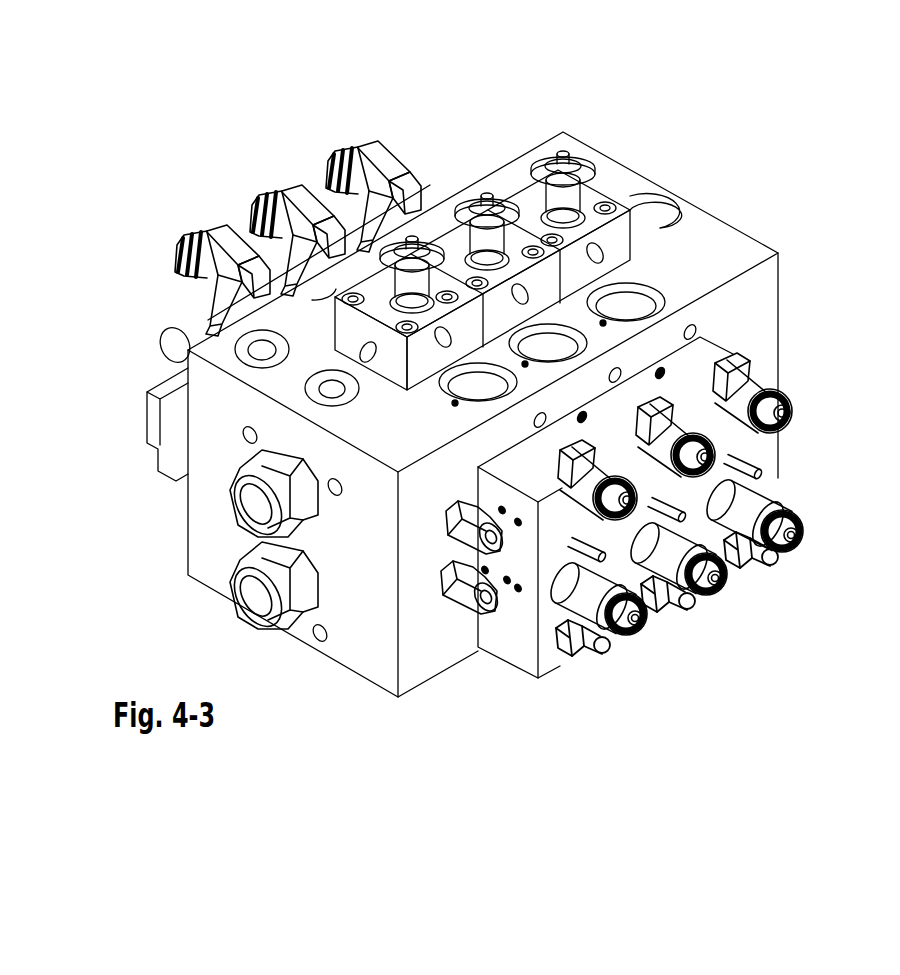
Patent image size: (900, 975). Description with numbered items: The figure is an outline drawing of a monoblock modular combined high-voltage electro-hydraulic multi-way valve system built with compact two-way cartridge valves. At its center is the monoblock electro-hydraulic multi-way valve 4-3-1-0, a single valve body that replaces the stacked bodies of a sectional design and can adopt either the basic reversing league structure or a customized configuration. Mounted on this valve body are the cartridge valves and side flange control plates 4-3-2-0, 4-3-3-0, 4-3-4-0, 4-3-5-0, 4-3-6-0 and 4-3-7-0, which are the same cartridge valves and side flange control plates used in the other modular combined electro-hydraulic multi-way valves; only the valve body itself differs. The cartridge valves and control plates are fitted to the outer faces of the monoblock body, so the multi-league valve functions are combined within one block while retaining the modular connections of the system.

The monoblock electro-hydraulic multi-way valve 4-3-1-0 is at (608, 175).
The cartridge valve and side flange control plate 4-3-2-0 is at (225, 313).
The cartridge valve and side flange control plate 4-3-3-0 is at (295, 278).
The cartridge valve and side flange control plate 4-3-4-0 is at (340, 160).
The cartridge valve and side flange control plate 4-3-5-0 is at (555, 660).
The cartridge valve and side flange control plate 4-3-6-0 is at (665, 545).
The cartridge valve and side flange control plate 4-3-7-0 is at (800, 520).